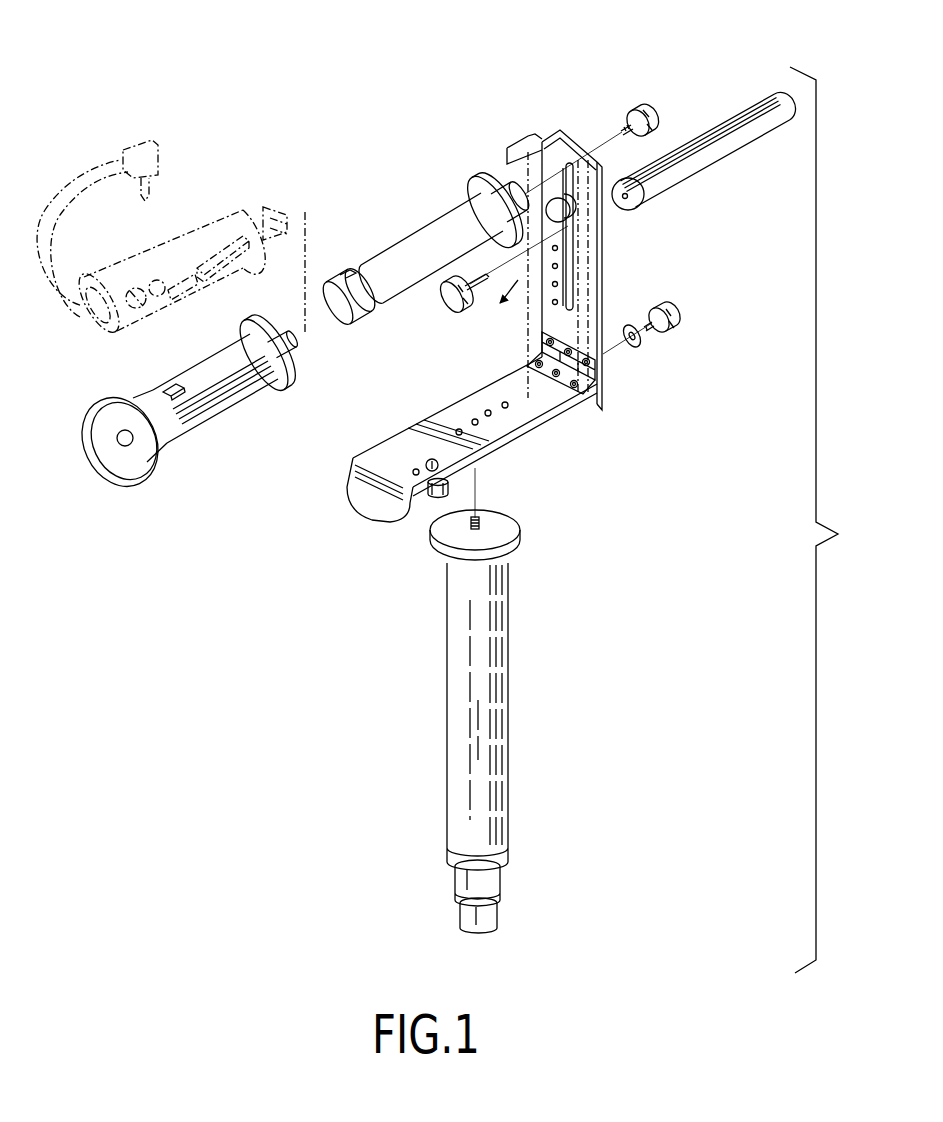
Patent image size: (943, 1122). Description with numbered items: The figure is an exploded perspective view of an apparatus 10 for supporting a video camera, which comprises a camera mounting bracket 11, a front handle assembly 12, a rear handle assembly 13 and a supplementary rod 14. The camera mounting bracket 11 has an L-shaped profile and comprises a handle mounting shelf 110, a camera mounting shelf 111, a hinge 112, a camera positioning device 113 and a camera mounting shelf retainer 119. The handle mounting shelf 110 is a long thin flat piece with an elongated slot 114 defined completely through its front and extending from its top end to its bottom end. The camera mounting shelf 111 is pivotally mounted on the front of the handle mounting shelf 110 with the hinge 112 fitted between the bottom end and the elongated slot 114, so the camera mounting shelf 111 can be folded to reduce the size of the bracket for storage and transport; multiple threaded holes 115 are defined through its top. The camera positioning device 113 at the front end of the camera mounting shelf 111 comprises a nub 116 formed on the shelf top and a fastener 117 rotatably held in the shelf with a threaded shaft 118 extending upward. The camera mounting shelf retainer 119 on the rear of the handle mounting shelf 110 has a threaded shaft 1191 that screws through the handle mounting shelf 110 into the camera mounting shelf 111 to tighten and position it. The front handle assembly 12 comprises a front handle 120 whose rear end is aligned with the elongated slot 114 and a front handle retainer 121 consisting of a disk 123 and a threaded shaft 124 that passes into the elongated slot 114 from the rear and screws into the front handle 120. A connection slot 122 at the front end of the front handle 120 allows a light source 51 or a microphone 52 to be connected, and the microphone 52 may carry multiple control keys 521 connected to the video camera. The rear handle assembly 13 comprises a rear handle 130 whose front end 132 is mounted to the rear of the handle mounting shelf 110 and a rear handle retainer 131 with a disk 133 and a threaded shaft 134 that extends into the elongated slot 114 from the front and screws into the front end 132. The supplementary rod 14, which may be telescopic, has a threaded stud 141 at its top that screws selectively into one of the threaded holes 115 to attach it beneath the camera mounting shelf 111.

The apparatus for supporting a video camera 10 is at (422, 98).
The camera mounting bracket 11 is at (588, 432).
The handle mounting shelf 110 is at (603, 253).
The camera mounting shelf 111 is at (516, 143).
The hinge 112 is at (608, 388).
The camera positioning device 113 is at (420, 507).
The elongated slot 114 is at (573, 293).
The threaded holes 115 is at (506, 408).
The nub 116 is at (415, 475).
The fastener 117 is at (452, 488).
The threaded shaft 118 is at (428, 462).
The camera mounting shelf retainer 119 is at (683, 333).
The threaded shaft 1191 is at (656, 330).
The front handle assembly 12 is at (450, 191).
The front handle 120 is at (428, 238).
The front handle retainer 121 is at (630, 104).
The connection slot 122 is at (345, 275).
The disk 123 is at (658, 111).
The threaded shaft 124 is at (623, 129).
The rear handle assembly 13 is at (731, 160).
The rear handle 130 is at (757, 100).
The rear handle retainer 131 is at (438, 298).
The front end 132 is at (634, 200).
The disk 133 is at (454, 312).
The threaded shaft 134 is at (469, 297).
The supplementary rod 14 is at (500, 749).
The threaded stud 141 is at (490, 528).
The light source 51 is at (220, 405).
The microphone 52 is at (243, 215).
The control keys 521 is at (142, 311).